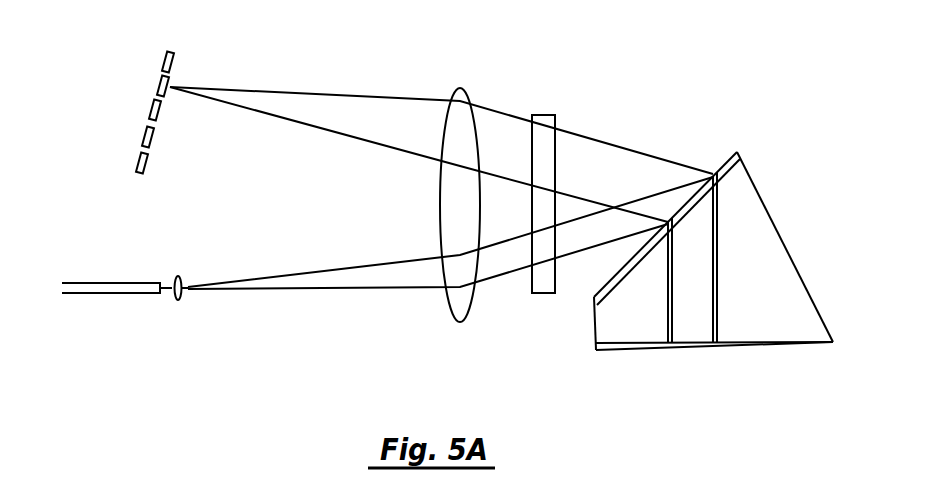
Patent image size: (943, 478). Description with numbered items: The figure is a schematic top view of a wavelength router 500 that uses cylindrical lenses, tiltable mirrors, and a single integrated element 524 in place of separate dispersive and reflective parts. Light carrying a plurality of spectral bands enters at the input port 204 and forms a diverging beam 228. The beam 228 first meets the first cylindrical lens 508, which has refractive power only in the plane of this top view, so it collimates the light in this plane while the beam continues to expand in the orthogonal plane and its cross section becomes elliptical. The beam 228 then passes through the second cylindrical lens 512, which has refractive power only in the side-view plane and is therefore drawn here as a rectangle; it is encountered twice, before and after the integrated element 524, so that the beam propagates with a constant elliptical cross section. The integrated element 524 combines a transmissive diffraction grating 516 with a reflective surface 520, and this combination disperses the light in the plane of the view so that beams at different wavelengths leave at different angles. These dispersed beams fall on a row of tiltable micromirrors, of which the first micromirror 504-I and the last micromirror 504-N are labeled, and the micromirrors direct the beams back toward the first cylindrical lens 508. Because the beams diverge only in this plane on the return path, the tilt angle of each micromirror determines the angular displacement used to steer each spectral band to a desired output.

The input port 204 is at (145, 295).
The diverging beam 228 is at (183, 297).
The wavelength router 500 is at (423, 313).
The tiltable micromirror 504-N is at (163, 60).
The tiltable micromirror 504-I is at (139, 162).
The first cylindrical lens 508 is at (463, 90).
The second cylindrical lens 512 is at (543, 113).
The transmissive diffraction grating 516 is at (727, 163).
The reflective surface 520 is at (783, 348).
The integrated element 524 is at (790, 252).